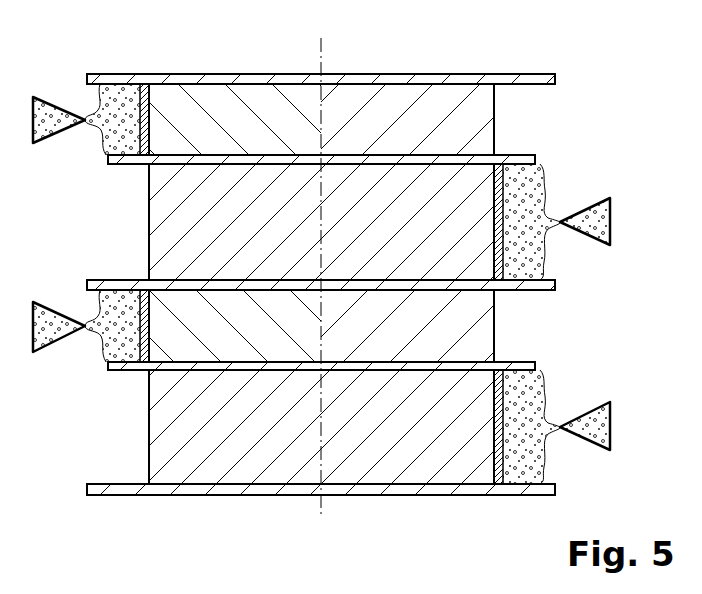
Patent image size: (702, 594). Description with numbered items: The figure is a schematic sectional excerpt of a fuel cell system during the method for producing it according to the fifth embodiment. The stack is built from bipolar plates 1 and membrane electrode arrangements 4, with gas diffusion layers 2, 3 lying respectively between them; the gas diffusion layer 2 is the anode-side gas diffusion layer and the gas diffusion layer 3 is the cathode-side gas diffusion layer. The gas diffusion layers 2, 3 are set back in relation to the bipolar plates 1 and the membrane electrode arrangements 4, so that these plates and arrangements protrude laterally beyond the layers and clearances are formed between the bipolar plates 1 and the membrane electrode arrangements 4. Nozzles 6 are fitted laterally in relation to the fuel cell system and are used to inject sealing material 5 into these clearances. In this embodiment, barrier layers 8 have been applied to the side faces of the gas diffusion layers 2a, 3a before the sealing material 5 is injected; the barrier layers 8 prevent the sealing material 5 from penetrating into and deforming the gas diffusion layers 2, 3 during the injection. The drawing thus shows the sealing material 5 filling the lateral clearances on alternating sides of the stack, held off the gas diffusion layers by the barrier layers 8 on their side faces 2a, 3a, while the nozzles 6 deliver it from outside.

The bipolar plate 1 is at (291, 77).
The anode-side gas diffusion layer 2 is at (388, 100).
The side face of the anode-side gas diffusion layer 2a is at (149, 105).
The cathode-side gas diffusion layer 3 is at (160, 208).
The side face of the cathode-side gas diffusion layer 3a is at (486, 274).
The membrane electrode arrangement 4 is at (536, 158).
The sealing material 5 is at (530, 252).
The nozzle 6 is at (612, 222).
The barrier layer 8 is at (145, 136).